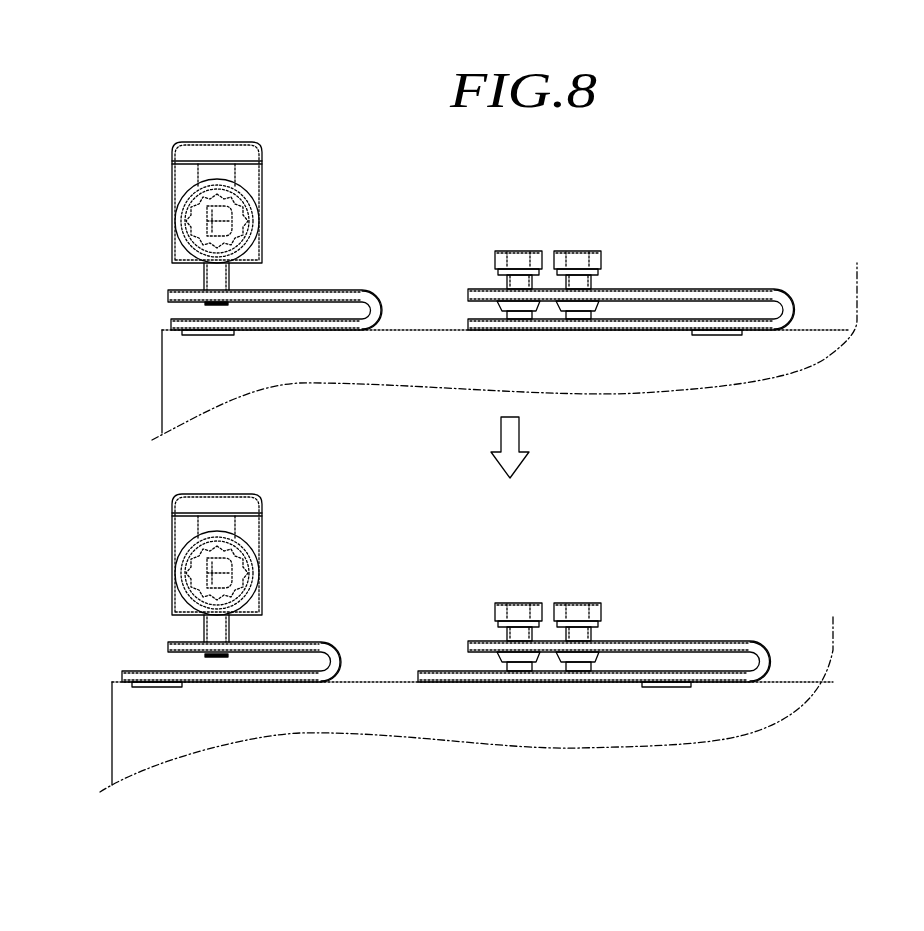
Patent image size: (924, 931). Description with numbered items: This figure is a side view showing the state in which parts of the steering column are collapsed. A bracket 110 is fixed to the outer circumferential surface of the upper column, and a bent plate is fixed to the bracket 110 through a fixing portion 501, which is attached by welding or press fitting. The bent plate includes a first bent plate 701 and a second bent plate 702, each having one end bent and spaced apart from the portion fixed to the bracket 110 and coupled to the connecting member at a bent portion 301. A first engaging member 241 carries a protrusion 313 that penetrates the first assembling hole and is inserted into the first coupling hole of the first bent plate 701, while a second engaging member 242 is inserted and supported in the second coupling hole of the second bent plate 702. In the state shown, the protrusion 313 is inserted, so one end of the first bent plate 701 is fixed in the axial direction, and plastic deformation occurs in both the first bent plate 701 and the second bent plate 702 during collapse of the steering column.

The bracket 110 is at (175, 366).
The first engaging member 241 is at (232, 147).
The second engaging member 242 is at (519, 258).
The bent portion of flexible circuit board 301 is at (384, 308).
The protrusion 313 is at (216, 276).
The fixing portion 501 is at (208, 337).
The first bent plate 701 is at (334, 292).
The second bent plate 702 is at (687, 290).